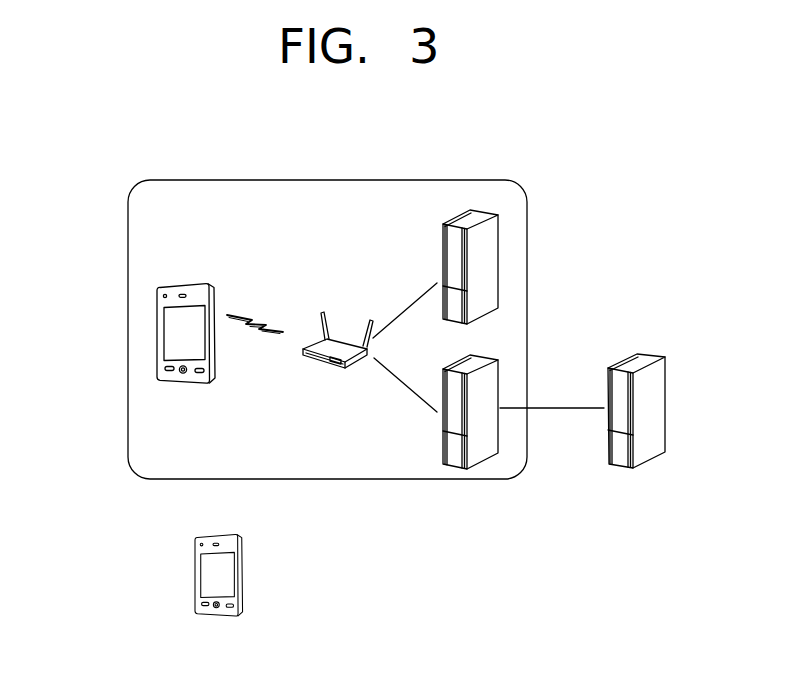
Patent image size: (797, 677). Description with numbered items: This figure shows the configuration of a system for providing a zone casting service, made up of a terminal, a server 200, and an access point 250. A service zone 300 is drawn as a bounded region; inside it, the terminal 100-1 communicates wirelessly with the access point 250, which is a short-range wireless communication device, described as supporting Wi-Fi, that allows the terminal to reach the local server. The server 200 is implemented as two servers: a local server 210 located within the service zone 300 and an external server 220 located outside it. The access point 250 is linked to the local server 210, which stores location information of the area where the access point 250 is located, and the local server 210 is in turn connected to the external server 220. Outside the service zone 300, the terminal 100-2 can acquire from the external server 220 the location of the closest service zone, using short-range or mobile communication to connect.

The service zone 300 is at (328, 173).
The terminal 100-1 is at (163, 323).
The terminal 100-2 is at (195, 566).
The access point 250 is at (322, 367).
The server 200 is at (498, 236).
The local server 210 is at (498, 378).
The external server 220 is at (665, 373).